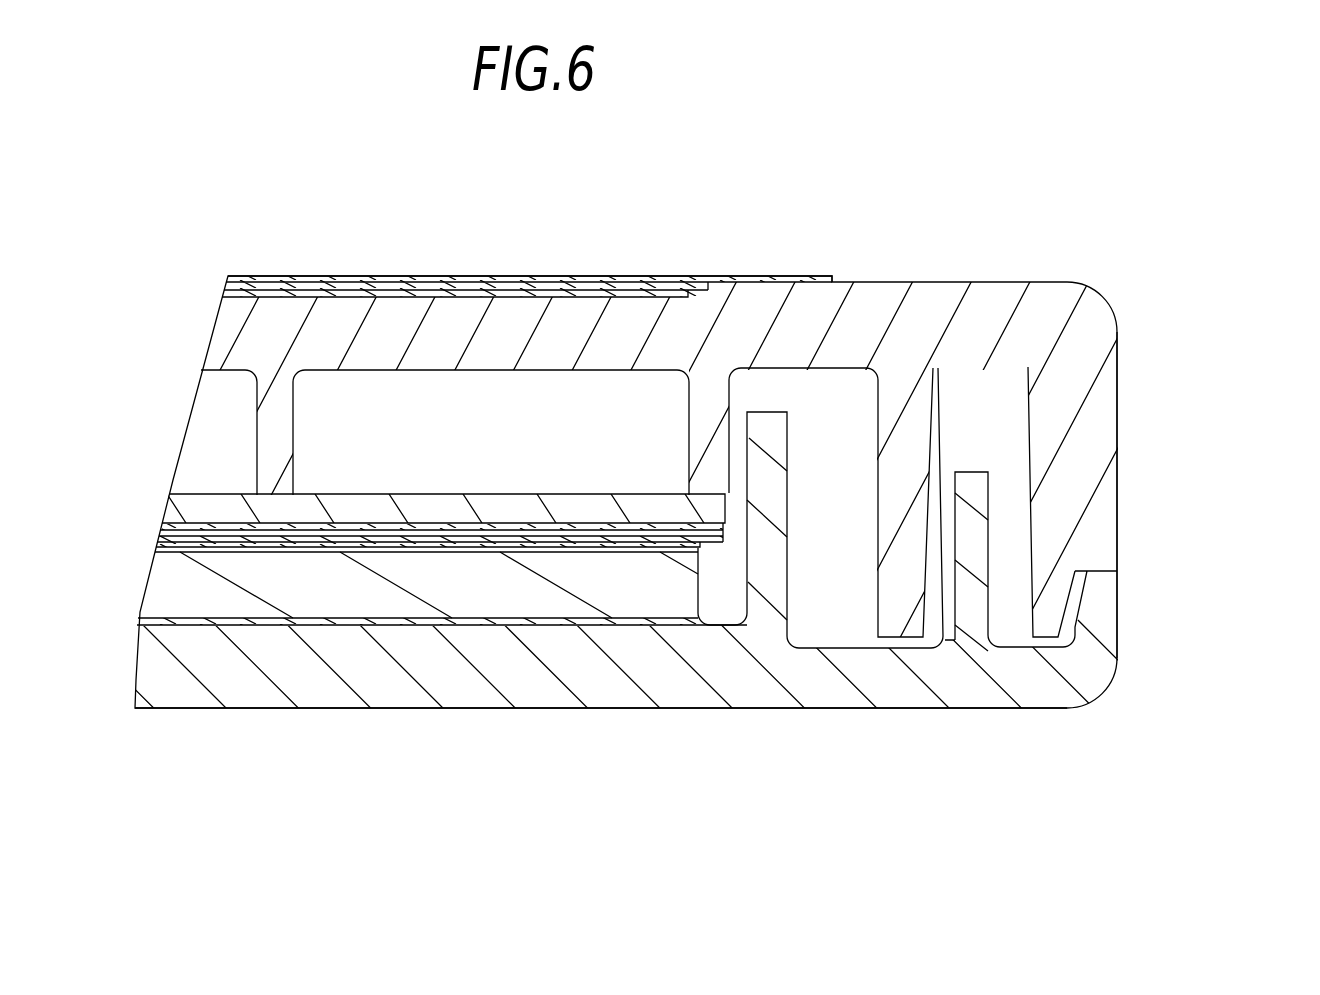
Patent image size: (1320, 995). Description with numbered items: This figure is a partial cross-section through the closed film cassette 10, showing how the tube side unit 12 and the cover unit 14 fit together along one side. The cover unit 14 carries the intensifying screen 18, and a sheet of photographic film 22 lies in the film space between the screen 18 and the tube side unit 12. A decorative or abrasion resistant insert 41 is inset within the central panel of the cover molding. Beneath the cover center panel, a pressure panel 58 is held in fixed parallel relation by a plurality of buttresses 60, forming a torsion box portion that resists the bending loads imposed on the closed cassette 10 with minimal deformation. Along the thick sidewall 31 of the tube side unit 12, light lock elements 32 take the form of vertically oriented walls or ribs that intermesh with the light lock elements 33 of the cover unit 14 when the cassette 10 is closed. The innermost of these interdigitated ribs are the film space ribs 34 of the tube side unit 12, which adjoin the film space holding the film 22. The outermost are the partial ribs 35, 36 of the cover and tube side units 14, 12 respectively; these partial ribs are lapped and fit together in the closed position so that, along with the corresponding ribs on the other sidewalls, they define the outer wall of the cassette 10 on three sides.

The film cassette 10 is at (548, 242).
The tube side unit 12 is at (630, 708).
The cover unit 14 is at (762, 276).
The intensifying screen 18 is at (160, 525).
The photographic film sheet 22 is at (707, 540).
The sidewall 31 is at (1195, 609).
The light lock elements 32 is at (963, 397).
The light lock elements 33 is at (896, 730).
The film space ribs 34 is at (783, 475).
The partial rib 35 is at (1120, 452).
The partial rib 36 is at (1120, 593).
The insert 41 is at (408, 276).
The pressure panel 58 is at (440, 494).
The buttresses 60 is at (293, 430).